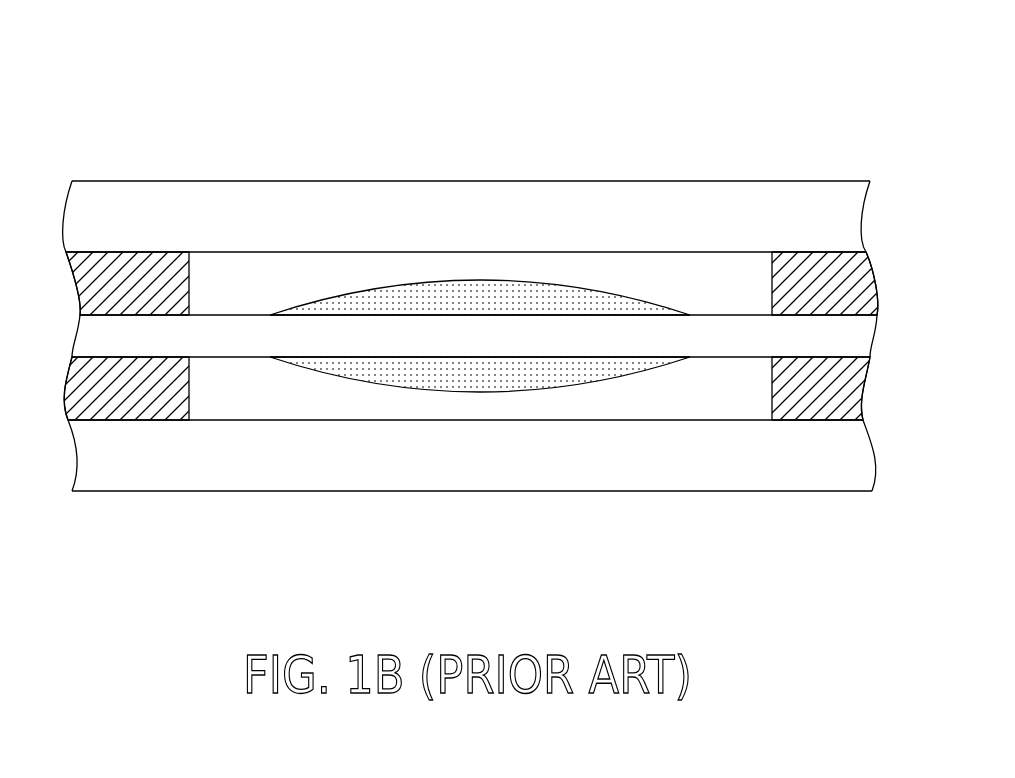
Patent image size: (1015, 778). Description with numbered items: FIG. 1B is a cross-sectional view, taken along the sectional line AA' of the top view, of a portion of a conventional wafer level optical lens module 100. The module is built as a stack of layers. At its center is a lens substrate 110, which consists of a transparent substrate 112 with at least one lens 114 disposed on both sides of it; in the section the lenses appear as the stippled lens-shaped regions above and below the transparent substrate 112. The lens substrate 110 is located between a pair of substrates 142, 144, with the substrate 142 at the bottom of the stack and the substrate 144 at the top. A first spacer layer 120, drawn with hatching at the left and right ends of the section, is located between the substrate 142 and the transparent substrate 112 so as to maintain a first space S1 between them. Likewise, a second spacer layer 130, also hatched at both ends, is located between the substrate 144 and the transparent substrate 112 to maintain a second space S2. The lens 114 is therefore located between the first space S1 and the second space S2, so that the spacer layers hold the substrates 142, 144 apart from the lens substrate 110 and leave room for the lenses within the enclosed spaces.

The wafer level optical lens module 100 is at (511, 294).
The lens substrate 110 is at (474, 209).
The transparent substrate 112 is at (702, 335).
The lens 114 is at (638, 372).
The first spacer layer 120 is at (840, 393).
The second spacer layer 130 is at (857, 293).
The substrate 142 is at (858, 468).
The substrate 144 is at (840, 213).
The first space S1 is at (748, 390).
The second space S2 is at (750, 275).